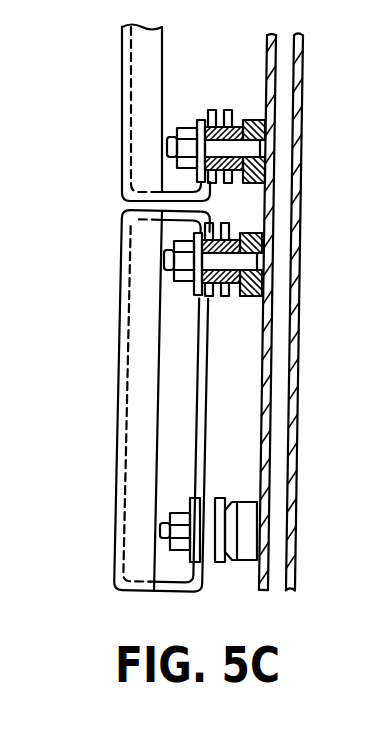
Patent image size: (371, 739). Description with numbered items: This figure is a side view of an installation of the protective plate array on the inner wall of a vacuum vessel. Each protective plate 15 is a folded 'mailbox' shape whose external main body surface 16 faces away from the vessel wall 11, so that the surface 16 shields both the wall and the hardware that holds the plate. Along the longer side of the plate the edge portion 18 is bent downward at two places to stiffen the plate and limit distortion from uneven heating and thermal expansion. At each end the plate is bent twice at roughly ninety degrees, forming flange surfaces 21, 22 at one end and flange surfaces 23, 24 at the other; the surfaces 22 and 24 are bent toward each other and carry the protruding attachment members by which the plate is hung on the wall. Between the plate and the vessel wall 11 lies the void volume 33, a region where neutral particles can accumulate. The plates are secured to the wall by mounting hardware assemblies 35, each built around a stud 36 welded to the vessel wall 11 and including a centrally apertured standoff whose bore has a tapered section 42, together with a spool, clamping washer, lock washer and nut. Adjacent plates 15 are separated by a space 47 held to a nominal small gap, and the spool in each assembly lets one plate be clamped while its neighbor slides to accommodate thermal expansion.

The vessel wall 11 is at (298, 330).
The protective plate 15 is at (199, 394).
The main body surface 16 is at (205, 394).
The edge portion 18 is at (140, 388).
The flange surface 21 is at (178, 222).
The flange surface 22 is at (215, 242).
The flange surface 23 is at (178, 190).
The flange surface 24 is at (213, 193).
The void volume 33 is at (223, 467).
The mounting hardware assembly 35 is at (261, 115).
The stud 36 is at (258, 263).
The tapered section 42 is at (265, 152).
The space 47 is at (125, 204).